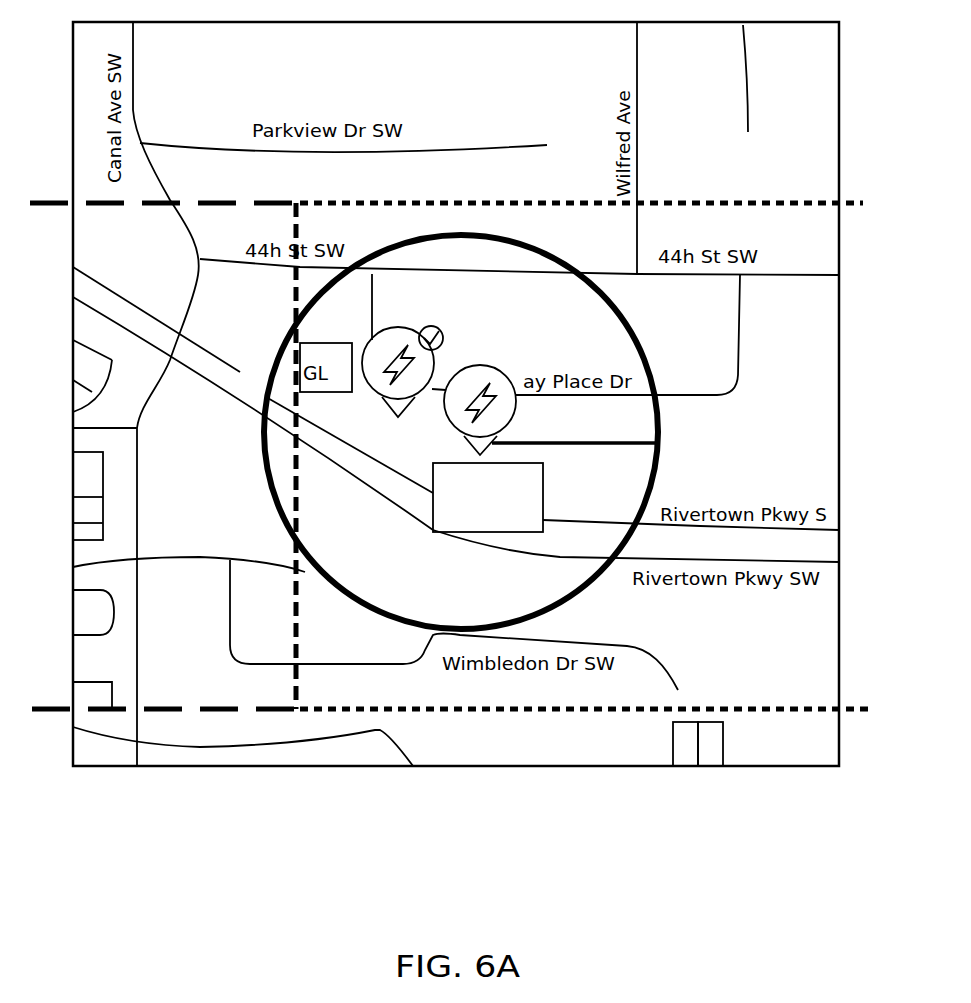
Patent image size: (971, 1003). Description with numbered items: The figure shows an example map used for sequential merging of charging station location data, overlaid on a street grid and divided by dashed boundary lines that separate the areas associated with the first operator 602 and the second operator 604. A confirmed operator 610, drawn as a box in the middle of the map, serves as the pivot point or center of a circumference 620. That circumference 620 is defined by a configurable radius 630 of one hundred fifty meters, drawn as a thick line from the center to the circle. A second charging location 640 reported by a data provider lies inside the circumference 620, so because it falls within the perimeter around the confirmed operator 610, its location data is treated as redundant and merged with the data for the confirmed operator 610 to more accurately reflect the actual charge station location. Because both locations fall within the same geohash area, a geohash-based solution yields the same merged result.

The first operator 602 is at (62, 203).
The second operator 604 is at (848, 203).
The confirmed operator 610 is at (490, 532).
The circumference 620 is at (658, 433).
The configurable radius 630 is at (573, 447).
The operator location 640 is at (377, 378).